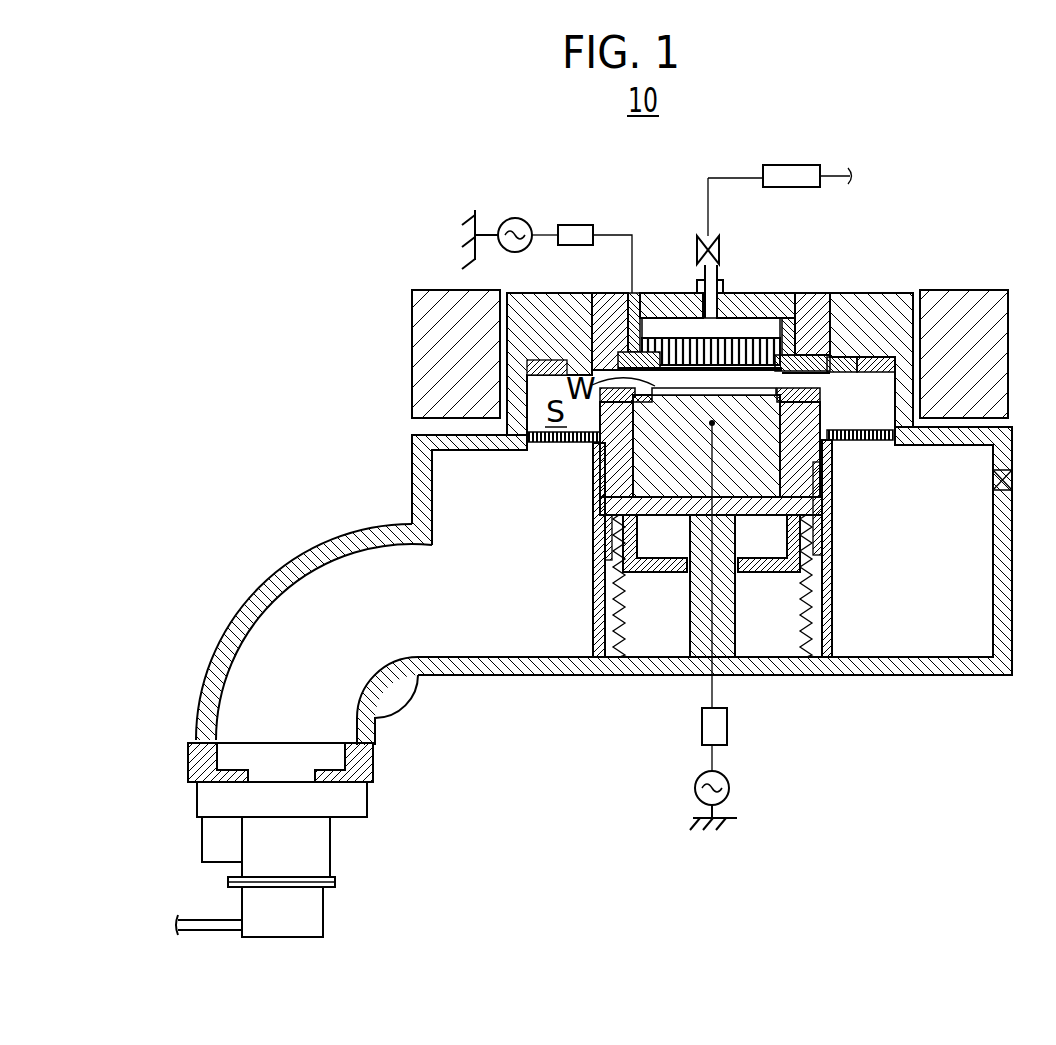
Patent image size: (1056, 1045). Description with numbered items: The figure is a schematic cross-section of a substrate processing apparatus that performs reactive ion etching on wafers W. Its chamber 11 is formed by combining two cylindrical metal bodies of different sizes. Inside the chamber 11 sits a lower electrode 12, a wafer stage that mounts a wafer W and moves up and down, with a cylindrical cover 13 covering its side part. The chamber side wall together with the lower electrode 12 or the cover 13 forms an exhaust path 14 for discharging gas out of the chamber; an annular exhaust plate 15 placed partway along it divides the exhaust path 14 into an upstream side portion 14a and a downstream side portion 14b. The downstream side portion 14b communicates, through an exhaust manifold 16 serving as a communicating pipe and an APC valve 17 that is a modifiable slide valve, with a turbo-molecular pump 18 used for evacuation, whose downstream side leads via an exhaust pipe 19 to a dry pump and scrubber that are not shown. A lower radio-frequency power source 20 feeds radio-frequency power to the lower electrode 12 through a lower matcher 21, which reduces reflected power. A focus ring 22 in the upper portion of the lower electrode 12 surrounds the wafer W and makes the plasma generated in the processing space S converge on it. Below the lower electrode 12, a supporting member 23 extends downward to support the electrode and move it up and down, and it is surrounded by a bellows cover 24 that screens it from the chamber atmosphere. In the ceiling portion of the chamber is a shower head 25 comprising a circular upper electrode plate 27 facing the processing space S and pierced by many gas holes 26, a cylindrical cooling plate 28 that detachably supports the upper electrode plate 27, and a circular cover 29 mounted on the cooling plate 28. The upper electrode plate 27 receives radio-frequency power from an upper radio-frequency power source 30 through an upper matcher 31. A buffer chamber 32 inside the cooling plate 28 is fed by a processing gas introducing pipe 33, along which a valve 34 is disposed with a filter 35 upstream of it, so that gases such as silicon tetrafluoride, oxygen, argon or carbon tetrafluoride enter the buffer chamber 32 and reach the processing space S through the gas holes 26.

The chamber 11 is at (914, 290).
The lower electrode 12 is at (786, 488).
The cover 13 is at (832, 570).
The exhaust path 14 is at (345, 402).
The upstream side portion 14a is at (530, 412).
The downstream side portion 14b is at (438, 461).
The exhaust plate 15 is at (567, 443).
The exhaust manifold 16 is at (243, 609).
The APC valve 17 is at (357, 800).
The turbo-molecular pump 18 is at (318, 848).
The exhaust pipe 19 is at (192, 920).
The lower radio-frequency power source 20 is at (733, 788).
The lower matcher 21 is at (727, 726).
The focus ring 22 is at (778, 388).
The supporting member 23 is at (727, 637).
The bellows cover 24 is at (806, 590).
The shower head 25 is at (798, 250).
The gas holes 26 is at (662, 360).
The upper electrode plate 27 is at (845, 320).
The cooling plate 28 is at (808, 318).
The cover 29 is at (632, 292).
The upper radio-frequency power source 30 is at (515, 218).
The upper matcher 31 is at (575, 225).
The buffer chamber 32 is at (740, 322).
The processing gas introducing pipe 33 is at (734, 177).
The valve 34 is at (703, 238).
The filter 35 is at (800, 165).